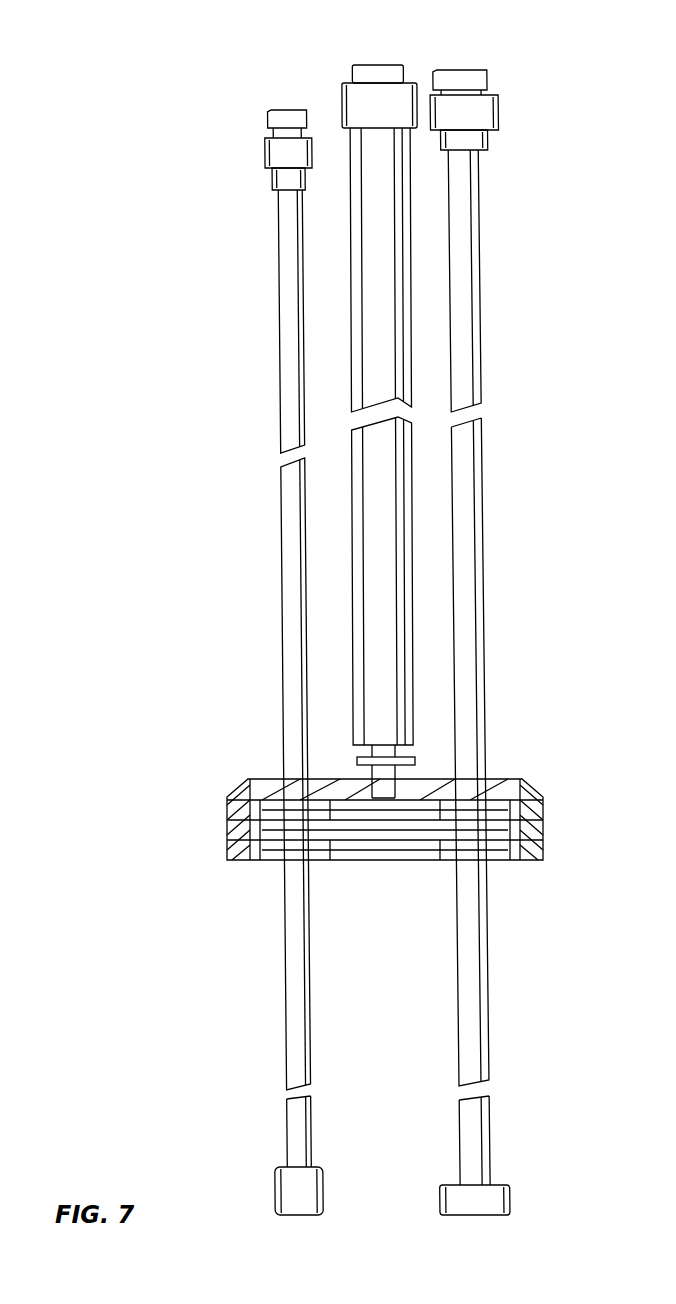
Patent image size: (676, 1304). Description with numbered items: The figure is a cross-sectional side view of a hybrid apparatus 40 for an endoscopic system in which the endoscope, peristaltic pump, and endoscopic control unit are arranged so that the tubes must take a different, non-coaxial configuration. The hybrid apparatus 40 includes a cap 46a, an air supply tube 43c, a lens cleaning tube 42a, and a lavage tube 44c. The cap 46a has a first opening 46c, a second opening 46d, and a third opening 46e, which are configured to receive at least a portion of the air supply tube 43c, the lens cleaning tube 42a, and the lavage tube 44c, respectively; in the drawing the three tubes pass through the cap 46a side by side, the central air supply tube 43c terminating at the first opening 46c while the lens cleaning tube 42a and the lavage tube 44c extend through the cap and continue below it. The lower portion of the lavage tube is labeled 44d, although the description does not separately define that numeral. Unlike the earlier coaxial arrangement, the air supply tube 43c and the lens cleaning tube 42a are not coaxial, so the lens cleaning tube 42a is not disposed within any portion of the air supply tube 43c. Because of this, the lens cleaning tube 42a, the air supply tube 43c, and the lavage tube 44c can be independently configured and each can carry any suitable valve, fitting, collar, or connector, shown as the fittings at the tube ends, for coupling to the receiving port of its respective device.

The hybrid apparatus 40 is at (100, 52).
The lens cleaning tube 42a is at (284, 973).
The air supply tube 43c is at (358, 347).
The lavage tube 44c is at (484, 467).
The third tube lower portion 44d is at (490, 1013).
The cap 46a is at (228, 830).
The first opening 46c is at (410, 782).
The second opening 46d is at (250, 782).
The third opening 46e is at (543, 820).